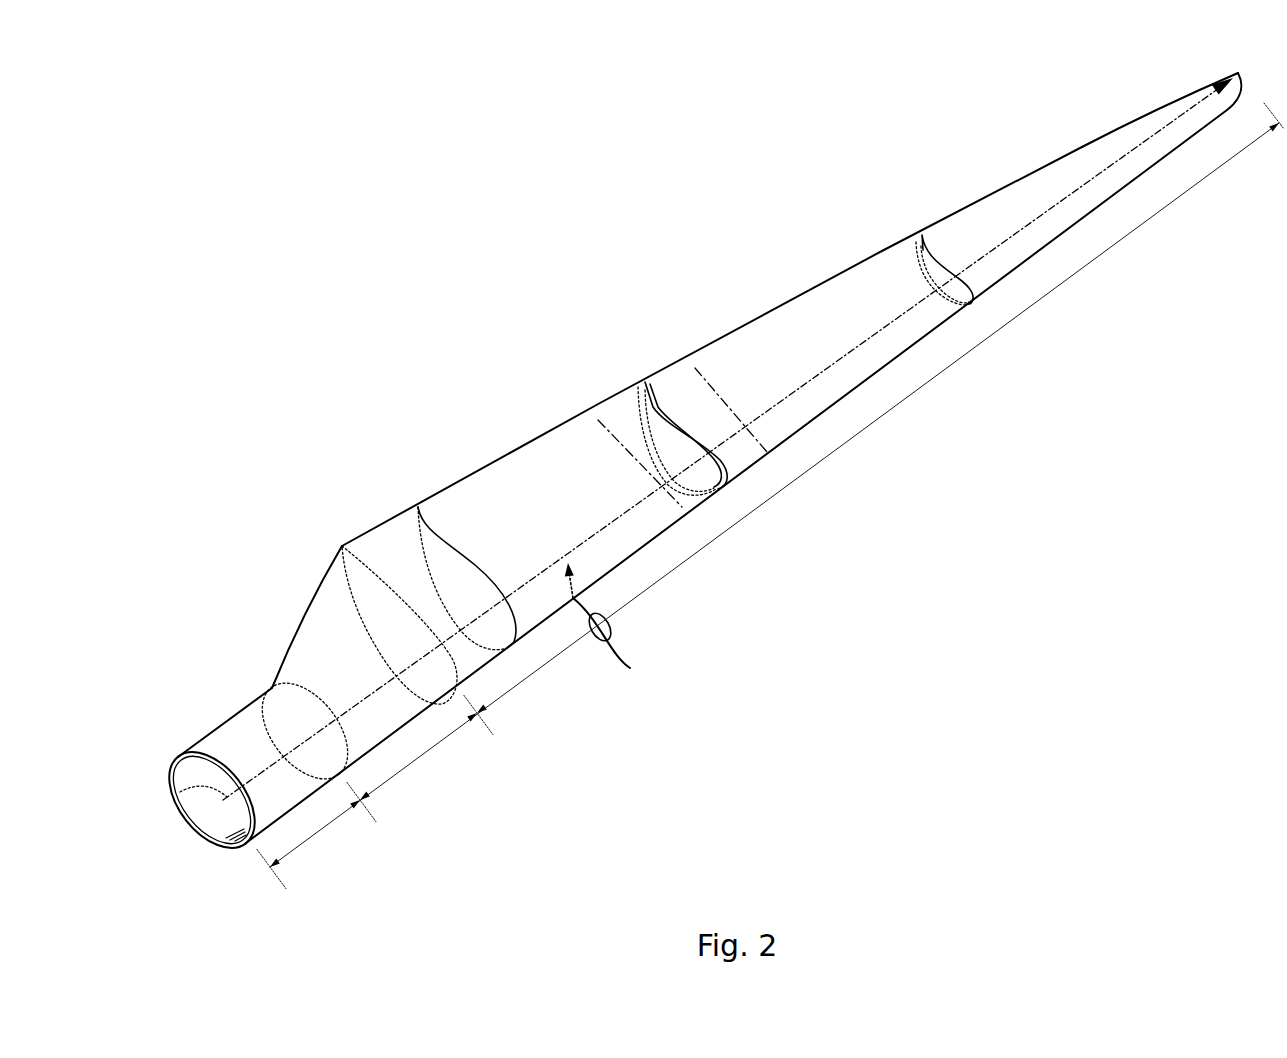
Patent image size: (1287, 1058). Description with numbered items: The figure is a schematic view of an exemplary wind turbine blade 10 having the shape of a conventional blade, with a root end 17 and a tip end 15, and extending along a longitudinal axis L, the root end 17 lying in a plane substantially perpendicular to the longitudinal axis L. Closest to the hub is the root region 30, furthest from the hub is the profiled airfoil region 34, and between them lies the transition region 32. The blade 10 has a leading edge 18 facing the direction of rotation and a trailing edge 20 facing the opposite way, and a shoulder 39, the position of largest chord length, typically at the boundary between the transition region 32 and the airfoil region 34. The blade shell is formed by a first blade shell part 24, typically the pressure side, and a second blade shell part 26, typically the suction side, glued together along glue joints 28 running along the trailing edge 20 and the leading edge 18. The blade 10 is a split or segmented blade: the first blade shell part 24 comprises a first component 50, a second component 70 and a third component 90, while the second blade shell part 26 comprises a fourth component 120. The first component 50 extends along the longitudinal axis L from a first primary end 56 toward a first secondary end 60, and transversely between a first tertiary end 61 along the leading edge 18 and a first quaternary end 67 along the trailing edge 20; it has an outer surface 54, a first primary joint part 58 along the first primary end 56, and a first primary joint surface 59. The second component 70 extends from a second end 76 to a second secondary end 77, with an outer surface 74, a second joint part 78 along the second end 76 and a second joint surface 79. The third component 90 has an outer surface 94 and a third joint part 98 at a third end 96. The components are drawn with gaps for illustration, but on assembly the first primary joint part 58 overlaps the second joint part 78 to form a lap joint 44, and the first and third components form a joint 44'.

The wind turbine blade 10 is at (518, 317).
The tip end 15 is at (1238, 73).
The root end 17 is at (168, 758).
The leading edge 18 is at (903, 357).
The trailing edge 20 is at (1003, 187).
The first blade shell part 24 is at (213, 753).
The second blade shell part 26 is at (203, 840).
The glue joints 28 is at (190, 767).
The root region 30 is at (317, 833).
The transition region 32 is at (423, 757).
The airfoil region 34 is at (810, 473).
The shoulder 39 is at (342, 546).
The joint 44 is at (781, 540).
The joint 44' is at (1025, 364).
The first component 50 is at (767, 337).
The outer surface 54 is at (807, 297).
The first primary end 56 is at (737, 495).
The first primary joint part 58 is at (763, 470).
The first primary joint surface 59 is at (681, 377).
The first secondary end 60 is at (920, 235).
The first tertiary end 61 is at (867, 380).
The first quaternary end 67 is at (720, 343).
The second component 70 is at (540, 457).
The outer surface 74 is at (510, 488).
The second end 76 is at (735, 500).
The second secondary end 77 is at (527, 634).
The second joint part 78 is at (697, 517).
The second joint surface 79 is at (604, 420).
The third component 90 is at (1037, 257).
The outer surface 94 is at (1077, 177).
The third end 96 is at (987, 293).
The third joint part 98 is at (950, 230).
The fourth component 120 is at (625, 627).
The longitudinal axis L is at (175, 793).